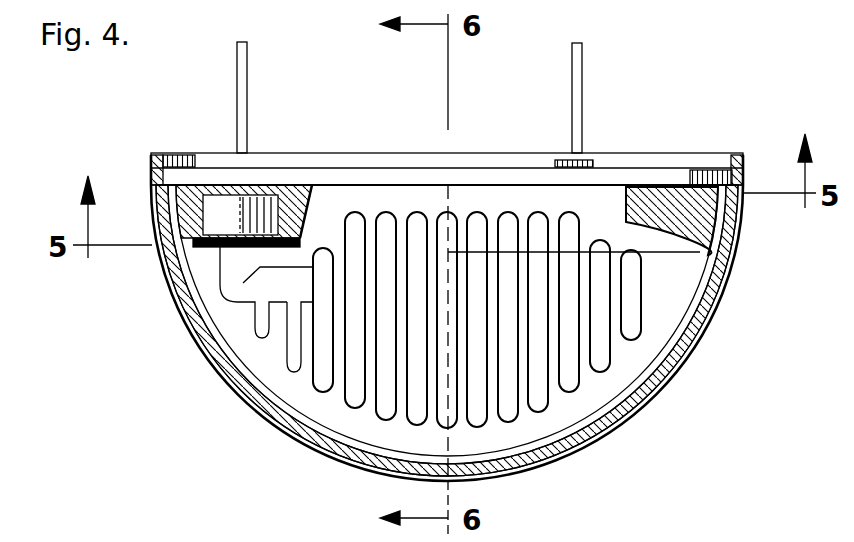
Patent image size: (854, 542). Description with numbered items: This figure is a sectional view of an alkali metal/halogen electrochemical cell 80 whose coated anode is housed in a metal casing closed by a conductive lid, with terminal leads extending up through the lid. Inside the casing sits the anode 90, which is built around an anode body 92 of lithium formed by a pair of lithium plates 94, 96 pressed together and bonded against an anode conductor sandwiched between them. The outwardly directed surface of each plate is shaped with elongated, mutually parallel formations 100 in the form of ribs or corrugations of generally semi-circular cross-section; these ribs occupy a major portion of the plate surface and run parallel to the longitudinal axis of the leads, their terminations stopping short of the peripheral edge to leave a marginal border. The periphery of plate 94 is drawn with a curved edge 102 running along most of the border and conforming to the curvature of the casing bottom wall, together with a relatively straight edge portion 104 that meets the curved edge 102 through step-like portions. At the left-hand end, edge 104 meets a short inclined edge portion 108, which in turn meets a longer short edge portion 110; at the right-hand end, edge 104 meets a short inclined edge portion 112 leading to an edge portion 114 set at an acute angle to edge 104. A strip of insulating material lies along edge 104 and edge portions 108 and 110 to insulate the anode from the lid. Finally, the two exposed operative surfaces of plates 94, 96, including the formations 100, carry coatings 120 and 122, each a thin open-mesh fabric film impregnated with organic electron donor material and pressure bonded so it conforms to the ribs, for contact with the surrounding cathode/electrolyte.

The electrochemical cell 80 is at (724, 116).
The anode 90 is at (705, 292).
The anode body 92 is at (700, 315).
The lithium plate 94 is at (675, 372).
The lithium plate 96 is at (655, 395).
The formations 100 is at (320, 392).
The curved edge 102 is at (492, 455).
The straight edge portion 104 is at (422, 158).
The inclined edge portion 108 is at (335, 158).
The edge portion 110 is at (205, 270).
The inclined edge portion 112 is at (660, 185).
The edge portion 114 is at (727, 232).
The coating 120 is at (235, 322).
The coating 122 is at (228, 348).